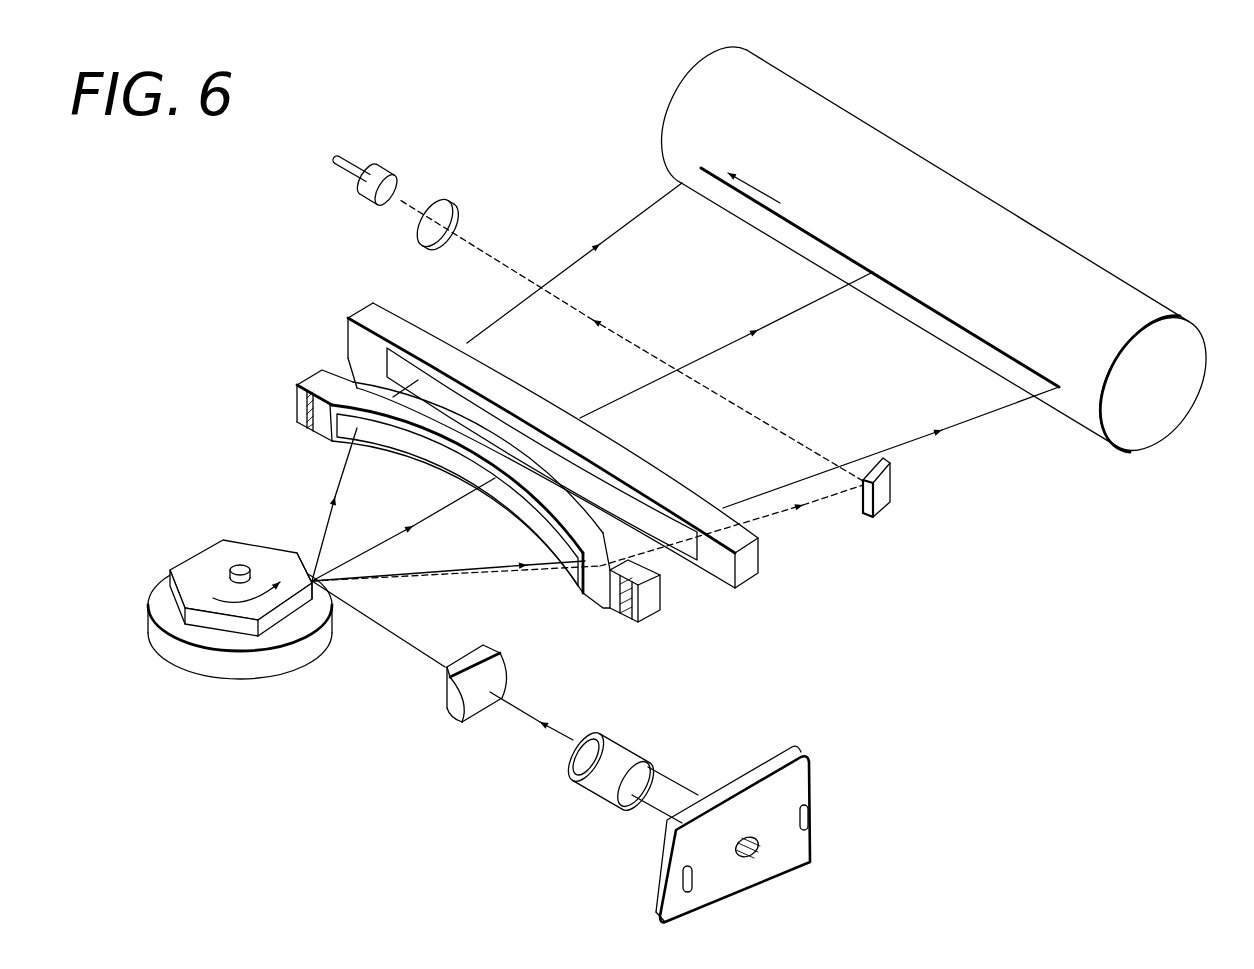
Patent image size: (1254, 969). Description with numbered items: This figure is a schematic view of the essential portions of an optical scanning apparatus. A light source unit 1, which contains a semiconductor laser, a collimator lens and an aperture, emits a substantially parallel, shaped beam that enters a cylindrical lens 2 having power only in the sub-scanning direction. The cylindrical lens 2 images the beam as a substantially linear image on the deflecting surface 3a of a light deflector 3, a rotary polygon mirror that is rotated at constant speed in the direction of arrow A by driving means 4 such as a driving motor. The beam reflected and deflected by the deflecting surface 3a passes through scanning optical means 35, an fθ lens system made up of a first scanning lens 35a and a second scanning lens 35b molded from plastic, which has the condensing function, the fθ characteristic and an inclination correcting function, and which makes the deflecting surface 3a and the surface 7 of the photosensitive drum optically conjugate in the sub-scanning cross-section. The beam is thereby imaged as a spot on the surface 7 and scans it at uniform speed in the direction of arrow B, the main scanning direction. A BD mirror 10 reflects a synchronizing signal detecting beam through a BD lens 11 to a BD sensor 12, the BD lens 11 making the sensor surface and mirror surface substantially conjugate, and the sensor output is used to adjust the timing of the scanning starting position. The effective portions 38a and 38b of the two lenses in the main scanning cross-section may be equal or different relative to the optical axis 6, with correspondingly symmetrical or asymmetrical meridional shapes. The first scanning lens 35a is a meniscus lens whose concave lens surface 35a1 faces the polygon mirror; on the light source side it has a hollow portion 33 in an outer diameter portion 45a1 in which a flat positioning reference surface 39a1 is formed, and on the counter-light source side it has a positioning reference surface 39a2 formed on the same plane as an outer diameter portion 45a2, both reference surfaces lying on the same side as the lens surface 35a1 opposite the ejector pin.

The light source unit 1 is at (763, 847).
The cylindrical lens 2 is at (450, 700).
The light deflector 3 is at (233, 566).
The deflecting surface 3a is at (312, 577).
The driving means 4 is at (214, 667).
The optical axis 6 is at (805, 307).
The surface of the photosensitive drum 7 is at (907, 168).
The BD mirror 10 is at (883, 488).
The BD lens 11 is at (450, 213).
The BD sensor 12 is at (385, 170).
The hollow portion 33 is at (684, 627).
The scanning optical means 35 is at (160, 225).
The first scanning lens 35a is at (462, 487).
The second scanning lens 35b is at (462, 409).
The lens surface 35a1 is at (418, 446).
The effective portion 38a is at (535, 528).
The effective portion 38b is at (402, 362).
The positioning reference surface 39a1 is at (628, 595).
The positioning reference surface 39a2 is at (298, 410).
The outer diameter portion 45a1 is at (655, 578).
The outer diameter portion 45a2 is at (320, 425).
The direction of arrow A is at (273, 597).
The direction of arrow B is at (760, 193).